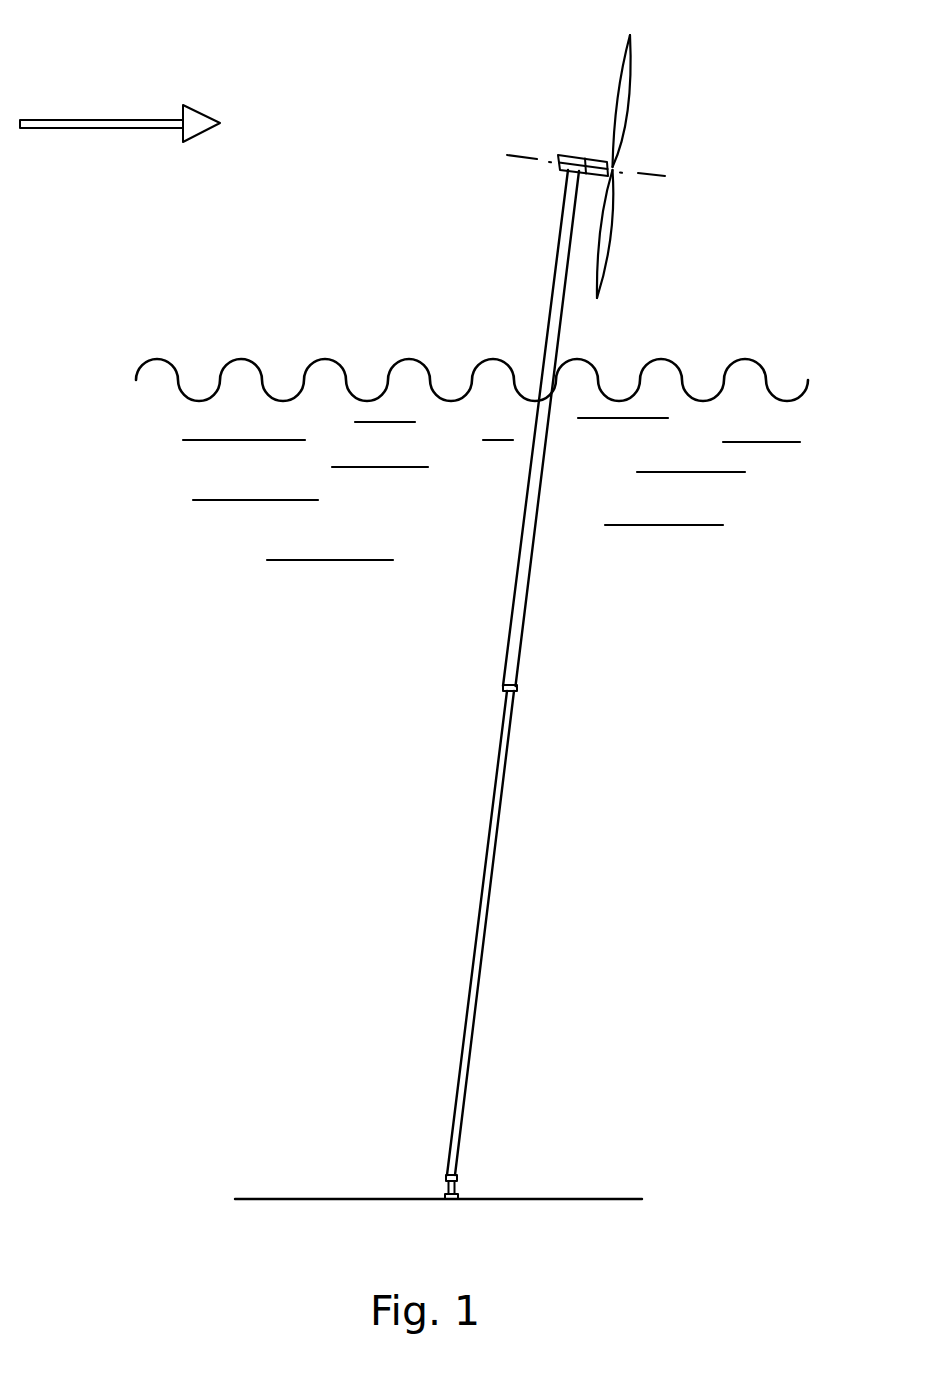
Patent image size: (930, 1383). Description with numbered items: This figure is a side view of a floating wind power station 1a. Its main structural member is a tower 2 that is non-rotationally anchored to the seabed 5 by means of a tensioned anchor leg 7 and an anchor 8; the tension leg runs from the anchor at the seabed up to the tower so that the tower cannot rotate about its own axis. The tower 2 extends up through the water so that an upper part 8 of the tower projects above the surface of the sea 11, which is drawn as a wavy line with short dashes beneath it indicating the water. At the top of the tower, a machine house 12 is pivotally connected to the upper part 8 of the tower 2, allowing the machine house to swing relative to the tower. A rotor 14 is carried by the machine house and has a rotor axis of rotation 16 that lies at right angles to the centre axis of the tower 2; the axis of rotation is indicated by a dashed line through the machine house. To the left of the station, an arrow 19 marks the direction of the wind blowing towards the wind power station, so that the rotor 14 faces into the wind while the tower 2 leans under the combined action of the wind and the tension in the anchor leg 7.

The floating wind power station 1a is at (688, 76).
The tower 2 is at (562, 326).
The seabed 5 is at (557, 1198).
The tensioned anchor leg 7 is at (473, 965).
The anchor / upper part of the tower 8 is at (572, 218).
The surface of the sea 11 is at (238, 357).
The machine house 12 is at (558, 157).
The rotor 14 is at (619, 80).
The rotor axis of rotation 16 is at (626, 171).
The arrow 19 is at (102, 130).